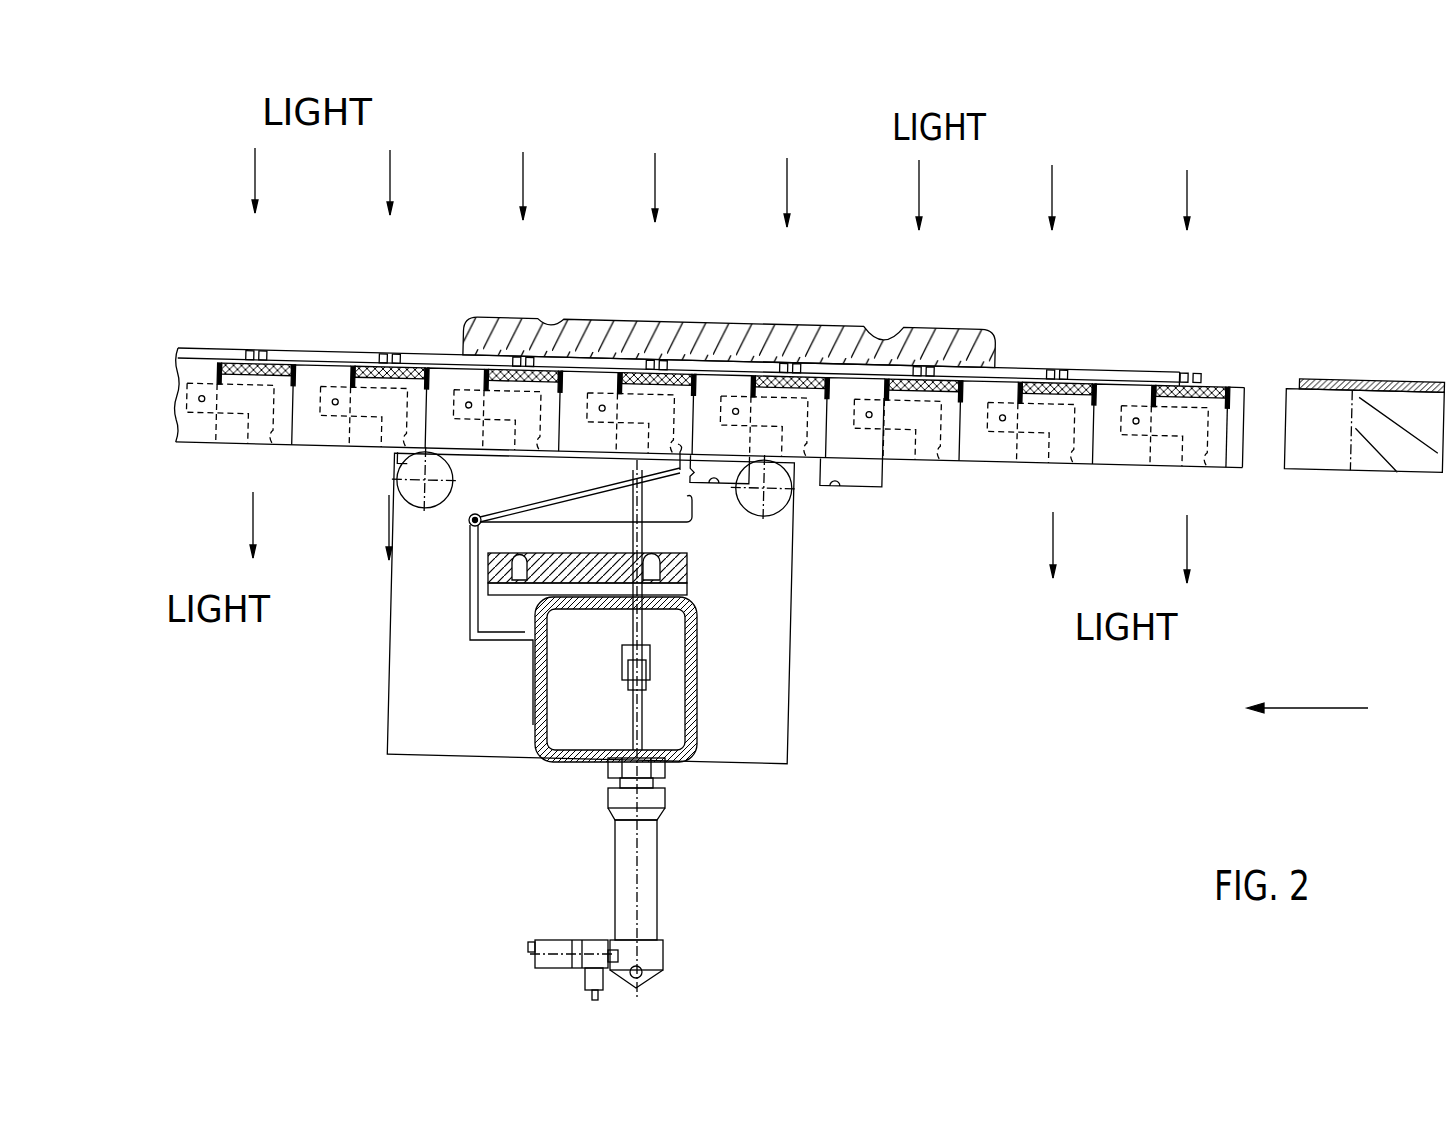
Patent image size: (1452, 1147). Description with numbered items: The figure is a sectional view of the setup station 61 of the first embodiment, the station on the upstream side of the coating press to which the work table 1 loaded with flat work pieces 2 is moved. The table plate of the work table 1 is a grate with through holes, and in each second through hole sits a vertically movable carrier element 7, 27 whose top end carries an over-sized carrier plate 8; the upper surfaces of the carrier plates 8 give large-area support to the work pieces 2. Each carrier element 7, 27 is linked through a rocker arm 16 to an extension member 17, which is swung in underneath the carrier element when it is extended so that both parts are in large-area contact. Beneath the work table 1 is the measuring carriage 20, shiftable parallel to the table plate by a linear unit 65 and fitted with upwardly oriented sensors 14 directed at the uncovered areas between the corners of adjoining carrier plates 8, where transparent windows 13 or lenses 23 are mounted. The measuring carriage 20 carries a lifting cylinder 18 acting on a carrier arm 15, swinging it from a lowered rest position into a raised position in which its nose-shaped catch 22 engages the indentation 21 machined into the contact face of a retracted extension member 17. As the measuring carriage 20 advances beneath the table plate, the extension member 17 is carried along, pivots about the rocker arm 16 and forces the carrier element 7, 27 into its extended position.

The work table 1 is at (1372, 415).
The work piece 2 is at (489, 340).
The carrier element 7 is at (1003, 393).
The carrier plate 8 is at (1073, 378).
The transparent window 13 is at (921, 398).
The sensor 14 is at (518, 583).
The carrier arm 15 is at (590, 493).
The rocker arm 16 is at (871, 437).
The extension member 17 is at (742, 470).
The lifting cylinder 18 is at (596, 879).
The measuring carriage 20 is at (458, 673).
The indentation 21 is at (700, 477).
The nose-shaped catch 22 is at (690, 512).
The lens 23 is at (1197, 388).
The carrier element 27 is at (829, 415).
The setup station 61 is at (1328, 709).
The linear unit 65 is at (423, 512).